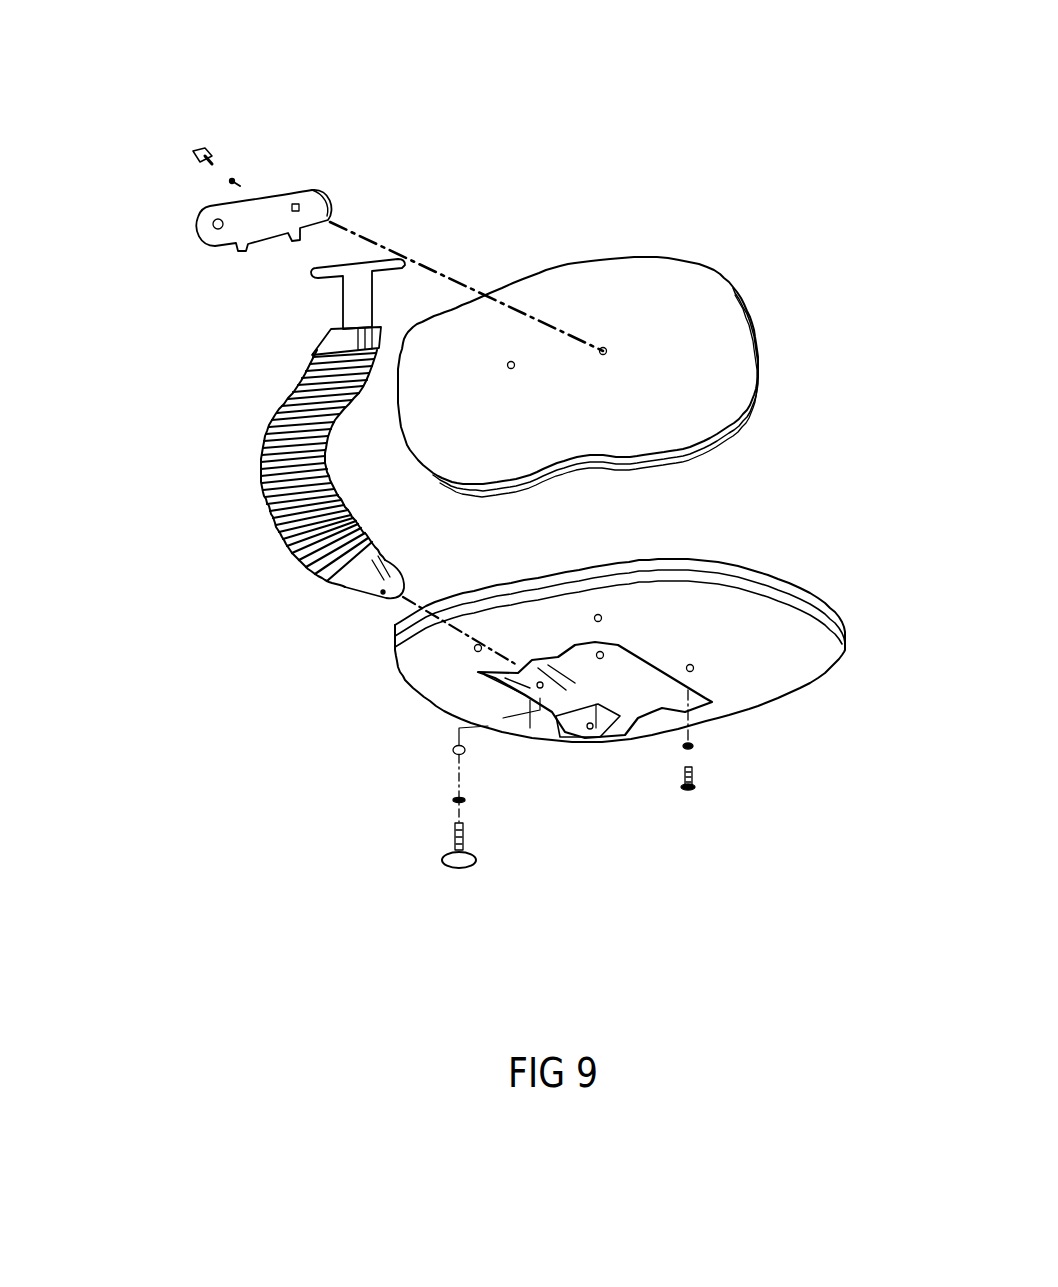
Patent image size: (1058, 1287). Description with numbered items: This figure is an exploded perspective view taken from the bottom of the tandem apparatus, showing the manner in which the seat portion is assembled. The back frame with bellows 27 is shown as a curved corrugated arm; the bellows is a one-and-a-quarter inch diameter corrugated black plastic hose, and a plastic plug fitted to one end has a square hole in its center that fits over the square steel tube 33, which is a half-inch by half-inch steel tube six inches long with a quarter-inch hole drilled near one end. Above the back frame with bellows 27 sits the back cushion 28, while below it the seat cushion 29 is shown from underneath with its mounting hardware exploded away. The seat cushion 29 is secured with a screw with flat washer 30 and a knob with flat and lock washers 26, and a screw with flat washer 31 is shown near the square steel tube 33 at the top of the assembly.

The knob with flat and lock washers 26 is at (440, 860).
The back frame with bellows 27 is at (267, 528).
The back cushion 28 is at (766, 378).
The seat cushion 29 is at (393, 657).
The screw with flat washer 30 is at (695, 787).
The screw with flat washer 31 is at (190, 152).
The square steel tube 33 is at (330, 196).